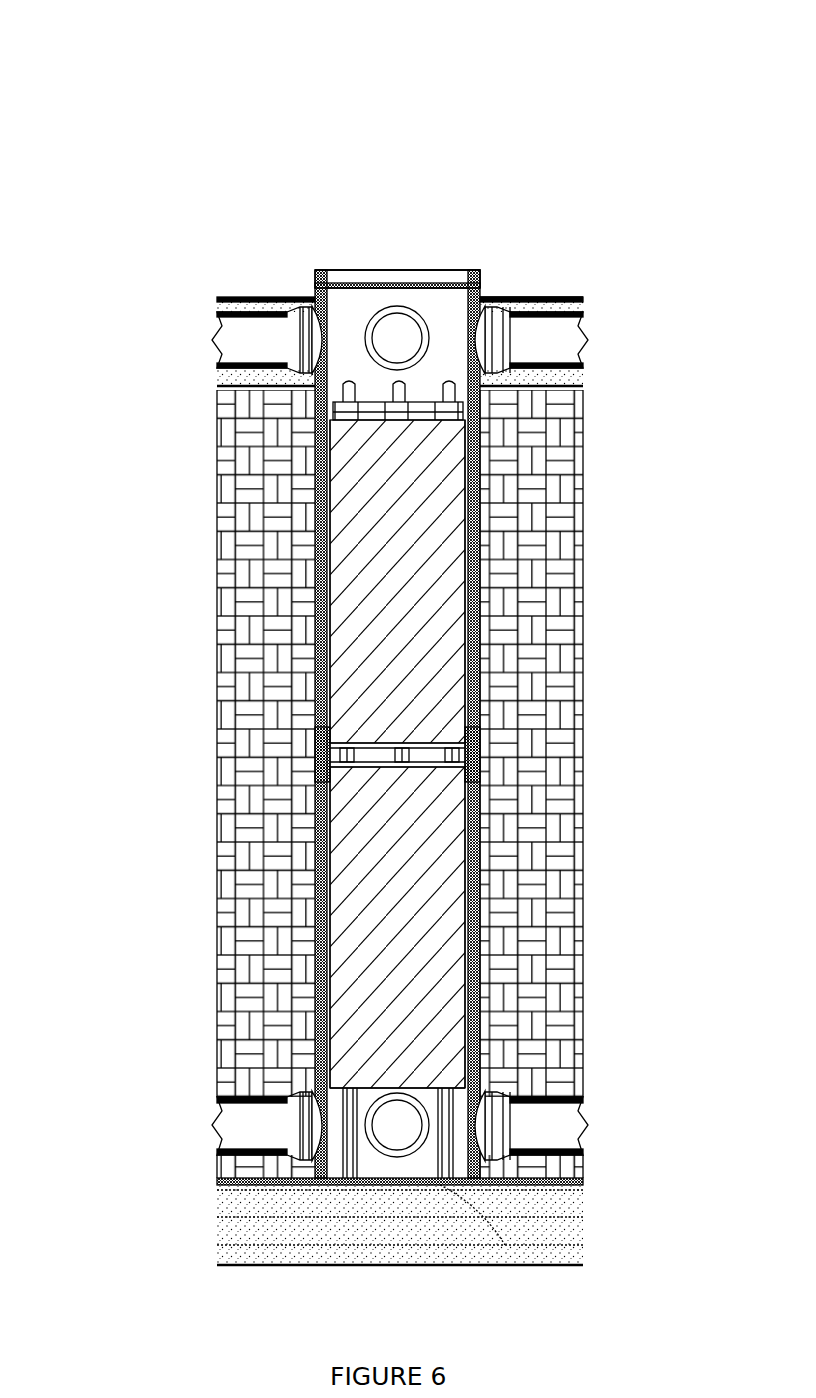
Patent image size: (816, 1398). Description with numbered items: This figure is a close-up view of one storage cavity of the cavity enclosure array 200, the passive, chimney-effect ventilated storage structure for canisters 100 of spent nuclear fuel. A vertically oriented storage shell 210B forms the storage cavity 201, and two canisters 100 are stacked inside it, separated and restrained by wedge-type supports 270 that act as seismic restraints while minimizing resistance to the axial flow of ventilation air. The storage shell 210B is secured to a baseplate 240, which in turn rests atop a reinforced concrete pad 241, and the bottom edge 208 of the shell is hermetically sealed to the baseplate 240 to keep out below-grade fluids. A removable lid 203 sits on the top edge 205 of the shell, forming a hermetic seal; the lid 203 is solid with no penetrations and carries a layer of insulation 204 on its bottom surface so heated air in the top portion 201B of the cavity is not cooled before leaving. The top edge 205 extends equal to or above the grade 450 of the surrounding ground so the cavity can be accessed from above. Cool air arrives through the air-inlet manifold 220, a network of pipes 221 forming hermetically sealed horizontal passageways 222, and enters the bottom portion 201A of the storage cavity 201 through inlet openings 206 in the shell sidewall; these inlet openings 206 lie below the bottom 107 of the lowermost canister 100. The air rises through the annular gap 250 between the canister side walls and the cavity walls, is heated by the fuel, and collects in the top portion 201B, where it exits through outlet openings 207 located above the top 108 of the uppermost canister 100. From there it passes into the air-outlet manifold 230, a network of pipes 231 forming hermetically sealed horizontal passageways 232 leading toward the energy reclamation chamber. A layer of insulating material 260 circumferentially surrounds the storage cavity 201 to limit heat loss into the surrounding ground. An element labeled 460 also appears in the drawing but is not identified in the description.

The cavity enclosure array 200 is at (598, 100).
The storage cavity 201 is at (477, 320).
The bottom portion of storage cavity 201A is at (480, 1244).
The top portion of storage cavity 201B is at (315, 272).
The removable lid 203 is at (403, 282).
The layer of insulation 204 is at (480, 270).
The top edge of storage shell 205 is at (397, 295).
The inlet opening 206 is at (303, 1090).
The outlet opening 207 is at (258, 300).
The bottom edge of storage shell 208 is at (475, 1215).
The storage shell 210B is at (480, 840).
The air-inlet manifold 220 is at (195, 1119).
The pipe of air-inlet manifold 221 is at (262, 1100).
The hermetically sealed horizontal passageway 222 is at (262, 1120).
The air-outlet manifold 230 is at (195, 345).
The pipe of air-outlet manifold 231 is at (217, 307).
The hermetically sealed horizontal passageway 232 is at (265, 355).
The baseplate 240 is at (480, 1189).
The reinforced concrete pad 241 is at (255, 1200).
The annular gap 250 is at (480, 720).
The layer of insulating material 260 is at (480, 810).
The wedge-type support 270 is at (560, 395).
The grade 450 is at (526, 284).
The upper liner section 460 is at (480, 660).
The canister 100 is at (420, 601).
The bottom of canister 107 is at (318, 778).
The top of canister 108 is at (585, 367).